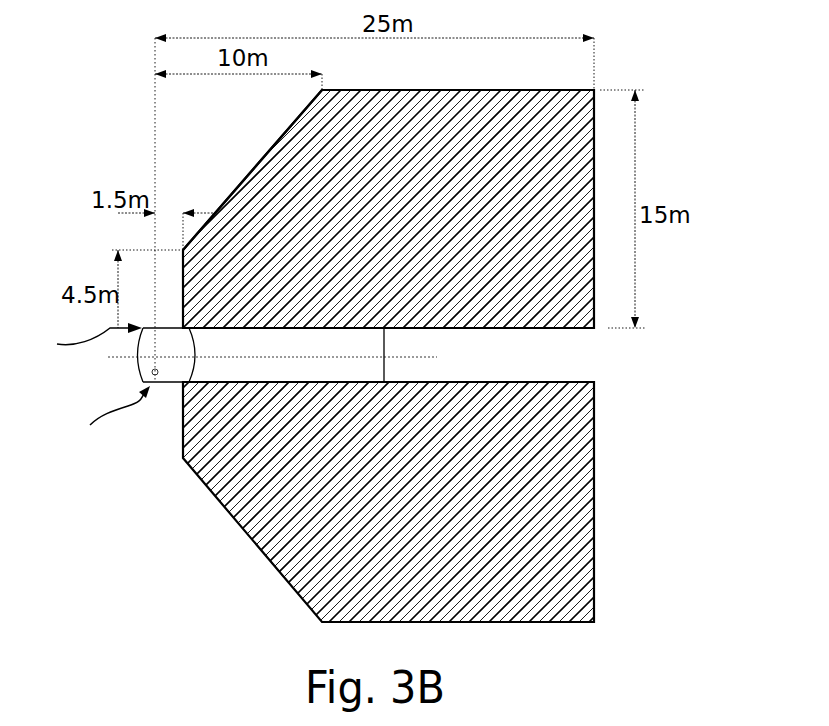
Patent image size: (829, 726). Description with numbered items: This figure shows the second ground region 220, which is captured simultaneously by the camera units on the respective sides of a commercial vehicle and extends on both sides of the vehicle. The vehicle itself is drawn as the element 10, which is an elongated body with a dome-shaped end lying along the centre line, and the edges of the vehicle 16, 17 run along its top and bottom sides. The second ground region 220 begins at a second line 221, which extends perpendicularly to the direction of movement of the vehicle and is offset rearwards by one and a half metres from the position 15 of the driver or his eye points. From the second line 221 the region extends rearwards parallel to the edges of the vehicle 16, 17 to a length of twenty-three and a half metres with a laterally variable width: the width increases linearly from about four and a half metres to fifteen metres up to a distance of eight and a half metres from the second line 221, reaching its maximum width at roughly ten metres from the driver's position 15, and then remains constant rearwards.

The second ground region 220 is at (597, 86).
The second line 221 is at (181, 236).
The tube 10 is at (133, 366).
The vehicle edge 16 is at (85, 340).
The vehicle edge 17 is at (110, 419).
The position of a driver 15 is at (160, 388).